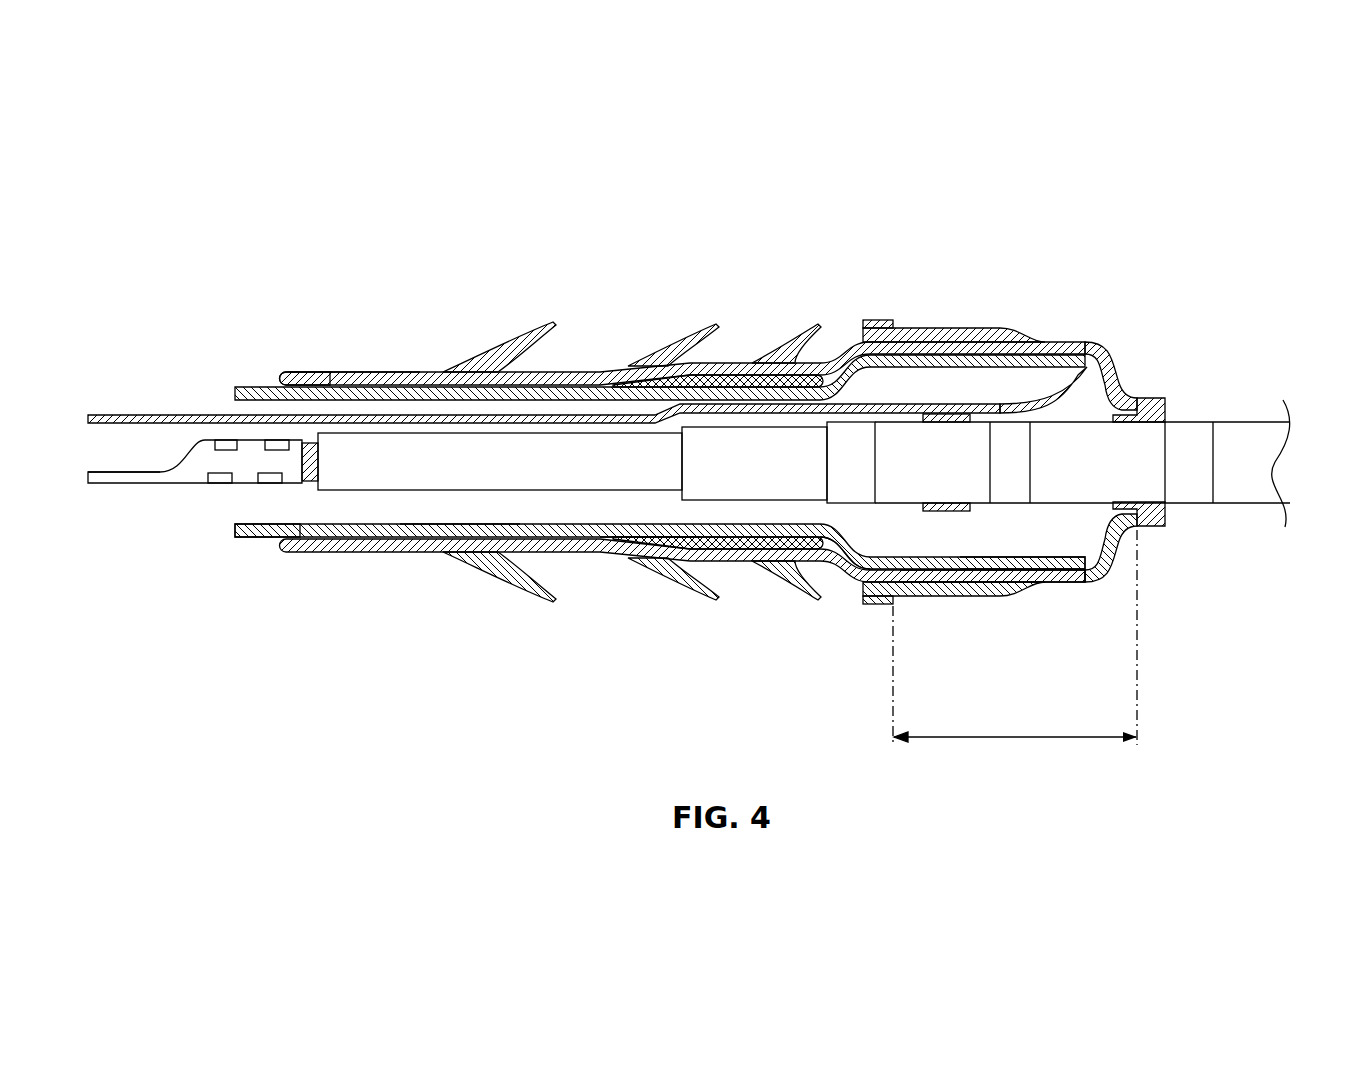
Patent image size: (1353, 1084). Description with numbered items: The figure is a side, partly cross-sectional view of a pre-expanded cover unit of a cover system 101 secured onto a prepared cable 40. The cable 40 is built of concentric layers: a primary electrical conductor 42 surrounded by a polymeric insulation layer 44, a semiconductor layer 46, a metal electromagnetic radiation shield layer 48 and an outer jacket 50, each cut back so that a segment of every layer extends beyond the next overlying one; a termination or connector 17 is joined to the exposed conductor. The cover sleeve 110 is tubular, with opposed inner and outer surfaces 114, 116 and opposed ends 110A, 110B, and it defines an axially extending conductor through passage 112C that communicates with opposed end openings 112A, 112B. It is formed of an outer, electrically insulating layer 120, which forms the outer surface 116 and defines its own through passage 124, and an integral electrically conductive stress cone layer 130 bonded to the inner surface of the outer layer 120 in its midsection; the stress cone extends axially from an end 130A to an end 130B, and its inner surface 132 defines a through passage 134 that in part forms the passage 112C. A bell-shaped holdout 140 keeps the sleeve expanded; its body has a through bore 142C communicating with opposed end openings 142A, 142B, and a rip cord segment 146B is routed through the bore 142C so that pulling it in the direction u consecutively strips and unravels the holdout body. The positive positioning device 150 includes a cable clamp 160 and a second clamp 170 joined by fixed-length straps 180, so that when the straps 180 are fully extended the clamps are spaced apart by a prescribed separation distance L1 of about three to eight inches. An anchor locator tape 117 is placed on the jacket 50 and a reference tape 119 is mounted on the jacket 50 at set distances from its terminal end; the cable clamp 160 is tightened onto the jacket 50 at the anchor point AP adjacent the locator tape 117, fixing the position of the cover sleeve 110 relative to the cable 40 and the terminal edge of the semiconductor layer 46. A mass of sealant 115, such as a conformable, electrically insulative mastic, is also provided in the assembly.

The cover system 101 is at (213, 167).
The termination or connector 17 is at (224, 442).
The cable 40 is at (1246, 509).
The primary electrical conductor 42 is at (307, 484).
The polymeric insulation layer 44 is at (600, 460).
The semiconductor layer 46 is at (735, 443).
The metal electromagnetic radiation shield layer 48 is at (866, 440).
The jacket 50 is at (1270, 457).
The cover sleeve 110 is at (402, 371).
The end of cover sleeve 110A is at (1007, 580).
The end of cover sleeve 110B is at (290, 370).
The end opening 112A is at (1053, 567).
The end opening 112B is at (221, 512).
The conductor through passage 112C is at (428, 505).
The inner surface of cover sleeve 114 is at (357, 400).
The sealant 115 is at (945, 416).
The outer surface of cover sleeve 116 is at (327, 373).
The anchor locator tape 117 is at (1188, 498).
The reference tape 119 is at (1010, 437).
The outer electrically insulating layer 120 is at (355, 548).
The conductor through passage of outer layer 124 is at (578, 509).
The stress cone layer 130 is at (702, 551).
The end of stress cone 130A is at (845, 590).
The end of stress cone 130B is at (640, 548).
The inner surface of stress cone layer 132 is at (722, 545).
The conductor through passage of stress cone 134 is at (719, 508).
The holdout 140 is at (250, 383).
The end opening of holdout 142A is at (1088, 398).
The end opening of holdout 142B is at (198, 497).
The through passage or bore of holdout 142C is at (518, 505).
The rip cord segment 146B is at (430, 415).
The positive positioning device 150 is at (966, 325).
The cable clamp 160 is at (1160, 400).
The clamp 170 is at (876, 320).
The strap 180 is at (1005, 347).
The anchor point AP is at (1015, 637).
The clamp spacing distance L1 is at (1030, 737).
The pull direction u is at (93, 374).